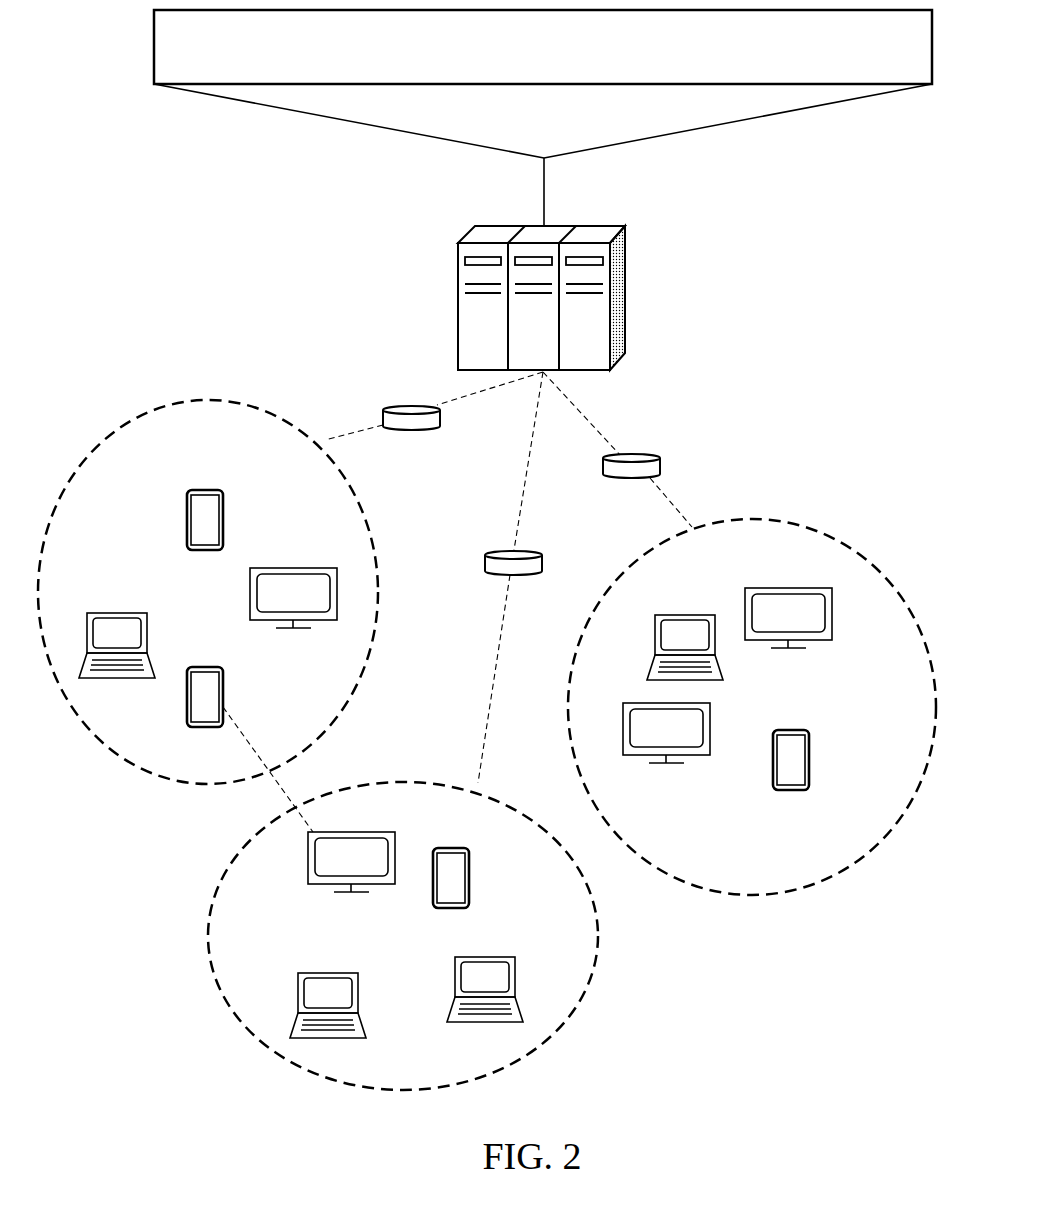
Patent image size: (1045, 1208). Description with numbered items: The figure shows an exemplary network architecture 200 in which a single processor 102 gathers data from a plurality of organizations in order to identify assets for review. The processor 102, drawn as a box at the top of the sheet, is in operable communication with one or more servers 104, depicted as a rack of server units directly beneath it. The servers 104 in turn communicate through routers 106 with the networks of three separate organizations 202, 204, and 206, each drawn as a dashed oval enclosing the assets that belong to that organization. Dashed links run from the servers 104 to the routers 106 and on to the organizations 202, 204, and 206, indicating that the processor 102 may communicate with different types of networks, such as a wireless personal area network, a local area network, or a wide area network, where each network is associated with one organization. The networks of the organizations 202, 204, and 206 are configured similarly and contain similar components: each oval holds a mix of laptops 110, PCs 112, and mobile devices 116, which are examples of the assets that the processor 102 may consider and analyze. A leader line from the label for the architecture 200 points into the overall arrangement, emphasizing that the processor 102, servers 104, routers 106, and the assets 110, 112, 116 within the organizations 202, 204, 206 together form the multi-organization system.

The processor 102 is at (612, 56).
The server 104 is at (633, 226).
The router 106 is at (498, 550).
The laptop 110 is at (136, 613).
The PC 112 is at (282, 568).
The mobile device 116 is at (223, 518).
The network architecture 200 is at (283, 243).
The organization 202 is at (228, 400).
The organization 204 is at (598, 948).
The organization 206 is at (784, 525).